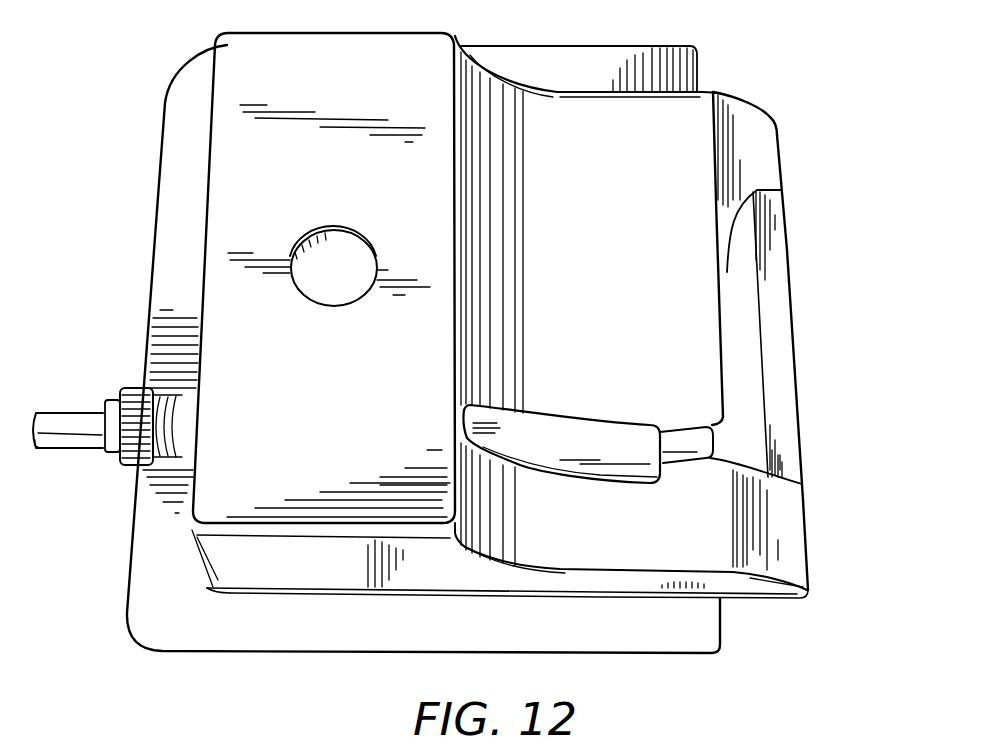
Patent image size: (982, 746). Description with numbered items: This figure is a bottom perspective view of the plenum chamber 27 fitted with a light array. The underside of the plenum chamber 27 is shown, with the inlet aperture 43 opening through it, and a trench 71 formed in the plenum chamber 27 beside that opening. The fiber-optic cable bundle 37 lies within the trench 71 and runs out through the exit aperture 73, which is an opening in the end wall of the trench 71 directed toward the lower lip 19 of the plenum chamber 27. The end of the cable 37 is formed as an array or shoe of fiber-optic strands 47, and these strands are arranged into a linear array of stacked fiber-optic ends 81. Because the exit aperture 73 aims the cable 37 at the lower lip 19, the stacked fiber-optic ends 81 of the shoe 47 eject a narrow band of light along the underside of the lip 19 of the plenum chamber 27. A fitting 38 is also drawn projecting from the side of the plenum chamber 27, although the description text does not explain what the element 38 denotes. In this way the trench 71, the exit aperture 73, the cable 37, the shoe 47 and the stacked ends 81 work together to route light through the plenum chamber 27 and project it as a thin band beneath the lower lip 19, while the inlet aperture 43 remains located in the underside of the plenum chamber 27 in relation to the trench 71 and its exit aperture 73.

The lower lip 19 is at (779, 132).
The plenum chamber 27 is at (175, 210).
The fiber-optic cable bundle 37 is at (690, 427).
The tube 38 is at (78, 440).
The inlet aperture 43 is at (366, 233).
The array or shoe of fiber-optic strands 47 is at (727, 251).
The trench 71 is at (593, 420).
The exit aperture 73 is at (677, 472).
The stacked fiber-optic ends 81 is at (793, 338).